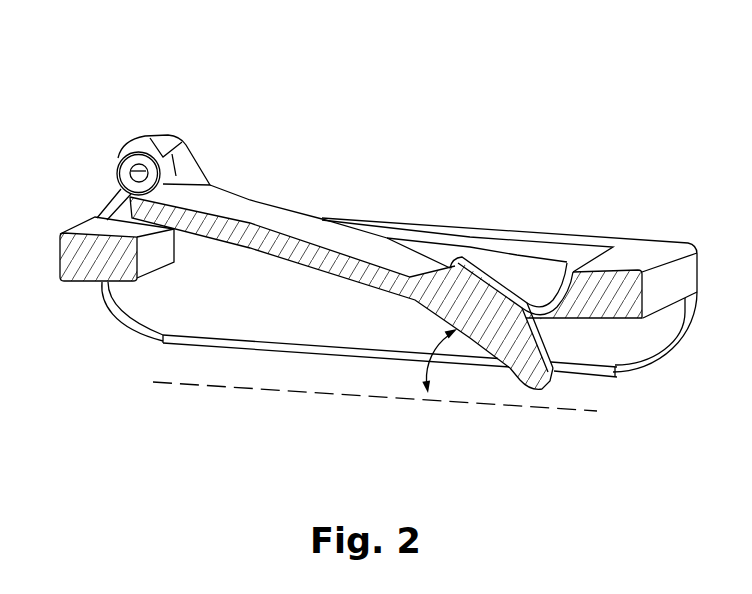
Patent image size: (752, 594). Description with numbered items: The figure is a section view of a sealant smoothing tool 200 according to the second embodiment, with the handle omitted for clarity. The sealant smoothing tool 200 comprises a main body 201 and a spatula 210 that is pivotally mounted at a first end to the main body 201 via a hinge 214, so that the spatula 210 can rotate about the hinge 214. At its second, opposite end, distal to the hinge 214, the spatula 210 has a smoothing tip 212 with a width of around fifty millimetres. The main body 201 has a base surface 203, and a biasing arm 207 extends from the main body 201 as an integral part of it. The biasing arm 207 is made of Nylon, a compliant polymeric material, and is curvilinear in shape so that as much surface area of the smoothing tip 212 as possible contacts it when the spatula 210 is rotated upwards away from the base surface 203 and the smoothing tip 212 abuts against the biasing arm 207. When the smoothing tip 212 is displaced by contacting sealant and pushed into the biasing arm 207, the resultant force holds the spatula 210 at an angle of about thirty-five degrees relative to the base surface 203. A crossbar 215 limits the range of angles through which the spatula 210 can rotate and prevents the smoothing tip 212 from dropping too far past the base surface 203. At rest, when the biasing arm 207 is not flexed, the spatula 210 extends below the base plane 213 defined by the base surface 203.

The sealant smoothing tool 200 is at (474, 126).
The main body 201 is at (162, 302).
The base surface 203 is at (322, 353).
The biasing arm 207 is at (496, 266).
The spatula 210 is at (265, 210).
The smoothing tip 212 is at (567, 371).
The base plane 213 is at (215, 385).
The hinge 214 is at (145, 133).
The crossbar 215 is at (93, 222).